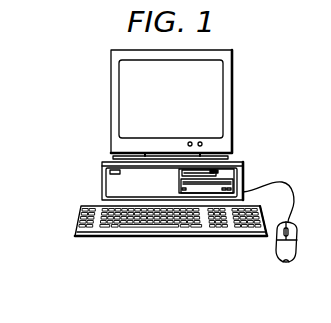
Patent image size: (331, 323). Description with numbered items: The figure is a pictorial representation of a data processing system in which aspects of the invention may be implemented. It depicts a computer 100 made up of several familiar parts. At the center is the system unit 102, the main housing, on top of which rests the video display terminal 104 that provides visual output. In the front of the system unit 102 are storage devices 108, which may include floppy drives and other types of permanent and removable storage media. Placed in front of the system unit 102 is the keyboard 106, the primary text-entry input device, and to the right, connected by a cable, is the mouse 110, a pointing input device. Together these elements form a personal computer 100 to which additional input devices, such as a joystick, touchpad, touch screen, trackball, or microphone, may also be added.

The computer 100 is at (56, 89).
The system unit 102 is at (102, 177).
The video display terminal 104 is at (232, 102).
The keyboard 106 is at (95, 237).
The storage devices 108 is at (230, 173).
The mouse 110 is at (287, 263).